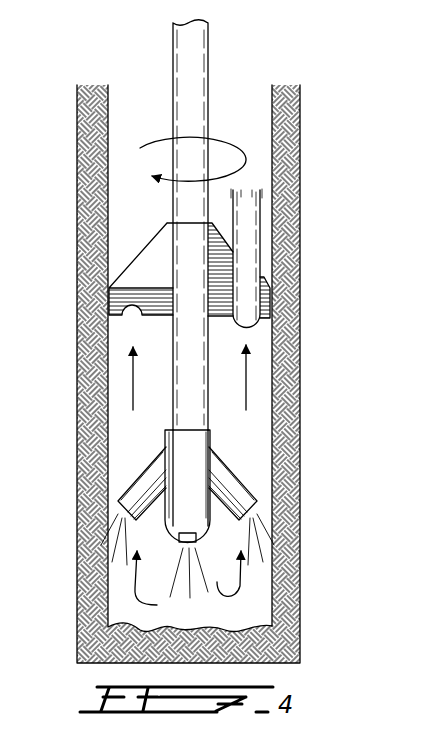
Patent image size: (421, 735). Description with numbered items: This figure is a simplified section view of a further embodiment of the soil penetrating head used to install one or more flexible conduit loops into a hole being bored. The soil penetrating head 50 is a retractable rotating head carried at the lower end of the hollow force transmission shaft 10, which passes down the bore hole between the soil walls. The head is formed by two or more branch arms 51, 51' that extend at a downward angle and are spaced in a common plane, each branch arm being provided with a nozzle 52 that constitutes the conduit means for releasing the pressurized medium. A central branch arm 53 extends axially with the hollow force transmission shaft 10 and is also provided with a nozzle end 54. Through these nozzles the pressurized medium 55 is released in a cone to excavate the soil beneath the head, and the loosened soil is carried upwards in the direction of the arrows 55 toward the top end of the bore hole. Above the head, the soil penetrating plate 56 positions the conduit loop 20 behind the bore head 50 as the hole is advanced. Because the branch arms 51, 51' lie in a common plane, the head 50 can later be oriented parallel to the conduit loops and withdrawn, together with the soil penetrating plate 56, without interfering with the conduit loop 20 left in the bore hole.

The hollow force transmission shaft 10 is at (197, 53).
The conduit loop 20 is at (243, 242).
The soil penetrating plate 56 is at (142, 272).
The soil penetrating head 50 is at (230, 461).
The branch arm 51 is at (292, 483).
The branch arm 51' is at (101, 483).
The nozzle 52 is at (118, 508).
The pressurized medium 55 is at (133, 393).
The nozzle end 54 is at (187, 542).
The central branch arm 53 is at (198, 525).